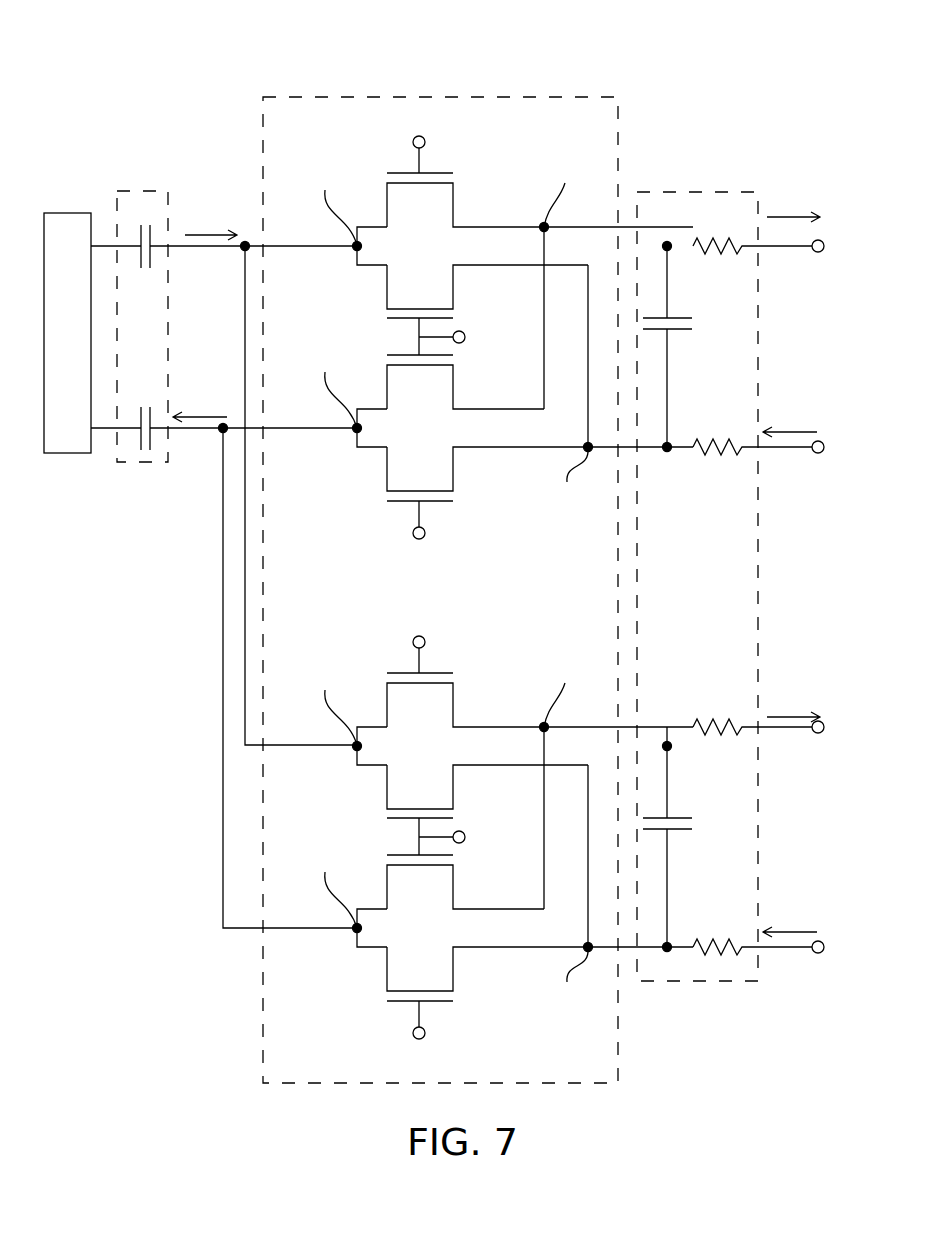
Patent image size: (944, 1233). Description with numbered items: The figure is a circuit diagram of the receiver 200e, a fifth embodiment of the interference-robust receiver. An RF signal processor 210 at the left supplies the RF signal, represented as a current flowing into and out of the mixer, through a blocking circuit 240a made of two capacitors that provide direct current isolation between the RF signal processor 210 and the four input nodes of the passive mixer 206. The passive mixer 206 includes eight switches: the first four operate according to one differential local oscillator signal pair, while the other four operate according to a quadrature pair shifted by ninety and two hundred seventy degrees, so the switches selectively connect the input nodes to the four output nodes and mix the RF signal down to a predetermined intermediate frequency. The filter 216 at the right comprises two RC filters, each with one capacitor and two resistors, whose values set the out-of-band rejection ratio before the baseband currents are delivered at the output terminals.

The receiver 200e is at (687, 58).
The passive mixer 206 is at (575, 98).
The RF signal processor 210 is at (63, 453).
The filter 216 is at (725, 192).
The blocking circuit 240a is at (157, 191).